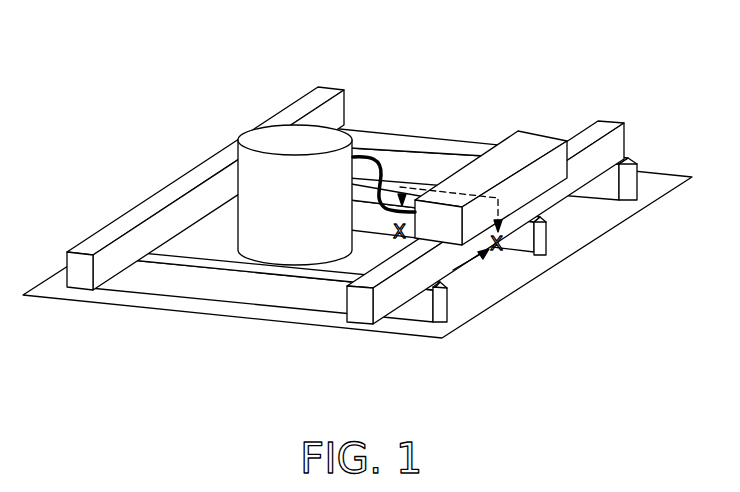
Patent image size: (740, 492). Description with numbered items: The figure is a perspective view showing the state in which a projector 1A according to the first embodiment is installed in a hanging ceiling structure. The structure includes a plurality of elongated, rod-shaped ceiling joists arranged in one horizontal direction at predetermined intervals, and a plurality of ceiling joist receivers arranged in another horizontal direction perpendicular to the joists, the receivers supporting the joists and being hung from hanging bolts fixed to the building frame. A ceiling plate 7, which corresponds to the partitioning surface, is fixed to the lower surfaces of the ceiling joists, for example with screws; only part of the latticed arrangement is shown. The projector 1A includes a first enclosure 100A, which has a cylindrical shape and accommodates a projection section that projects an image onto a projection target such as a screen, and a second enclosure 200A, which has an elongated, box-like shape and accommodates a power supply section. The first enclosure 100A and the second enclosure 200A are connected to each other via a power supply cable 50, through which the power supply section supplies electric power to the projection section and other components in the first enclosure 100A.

The projector 1A is at (362, 92).
The first enclosure 100A is at (260, 137).
The second enclosure 200A is at (533, 140).
The power supply cable 50 is at (374, 152).
The ceiling plate 7 is at (477, 314).